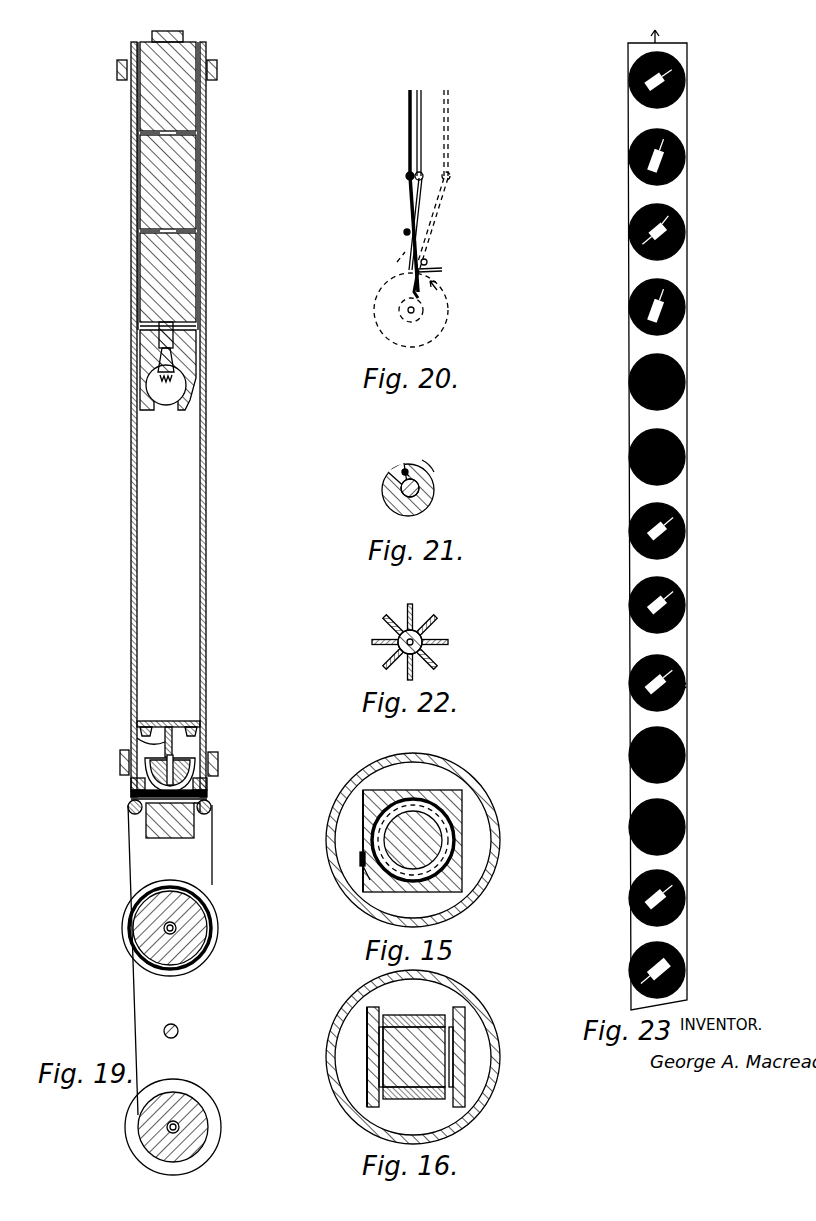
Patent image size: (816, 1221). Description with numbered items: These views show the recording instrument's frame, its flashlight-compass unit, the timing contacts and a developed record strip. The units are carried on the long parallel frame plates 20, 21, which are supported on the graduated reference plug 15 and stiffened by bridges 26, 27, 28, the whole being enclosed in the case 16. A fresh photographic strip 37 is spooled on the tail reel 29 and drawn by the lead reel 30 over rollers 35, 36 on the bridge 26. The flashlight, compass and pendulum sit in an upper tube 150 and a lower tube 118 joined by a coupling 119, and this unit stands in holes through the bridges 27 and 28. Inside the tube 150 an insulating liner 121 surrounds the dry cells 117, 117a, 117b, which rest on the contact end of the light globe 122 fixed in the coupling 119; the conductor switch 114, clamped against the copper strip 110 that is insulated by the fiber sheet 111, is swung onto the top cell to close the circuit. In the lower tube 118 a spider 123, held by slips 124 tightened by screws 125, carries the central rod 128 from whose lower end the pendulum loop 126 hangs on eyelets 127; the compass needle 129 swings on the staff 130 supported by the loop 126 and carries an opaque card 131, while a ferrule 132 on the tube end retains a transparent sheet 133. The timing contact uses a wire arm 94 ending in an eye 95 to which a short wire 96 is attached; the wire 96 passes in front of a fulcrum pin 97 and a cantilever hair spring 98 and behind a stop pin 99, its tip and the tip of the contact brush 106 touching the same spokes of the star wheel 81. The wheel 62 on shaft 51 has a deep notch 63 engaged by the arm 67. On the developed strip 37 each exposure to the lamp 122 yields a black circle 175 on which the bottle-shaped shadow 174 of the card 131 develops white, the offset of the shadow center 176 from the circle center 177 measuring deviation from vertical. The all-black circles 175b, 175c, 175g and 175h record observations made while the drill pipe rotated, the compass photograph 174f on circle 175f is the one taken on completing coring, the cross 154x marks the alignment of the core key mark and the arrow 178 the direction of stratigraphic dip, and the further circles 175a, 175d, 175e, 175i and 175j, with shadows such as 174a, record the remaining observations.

In FIG. 19, the conductor switch 114 is at (184, 36).
In FIG. 19, the graduated reference plug 15 is at (255, 68).
In FIG. 19, the bridge 28 is at (218, 72).
In FIG. 19, the electric dry cell 117 is at (152, 99).
In FIG. 15, the electric dry cell 117 is at (445, 862).
In FIG. 19, the electric dry cell 117a is at (152, 183).
In FIG. 19, the electric dry cell 117b is at (155, 272).
In FIG. 19, the liner 121 is at (206, 166).
In FIG. 15, the liner 121 is at (455, 847).
In FIG. 19, the upper tube 150 is at (206, 267).
In FIG. 15, the upper tube 150 is at (452, 834).
In FIG. 19, the electric light globe 122 is at (172, 379).
In FIG. 19, the coupling 119 is at (203, 375).
In FIG. 19, the lower tube 118 is at (206, 569).
In FIG. 19, the spider 123 is at (178, 721).
In FIG. 19, the slips 124 is at (200, 722).
In FIG. 19, the tail reel 29 is at (233, 930).
In FIG. 19, the screws 125 is at (200, 743).
In FIG. 19, the eyelets 127 is at (182, 761).
In FIG. 19, the rod 128 is at (138, 742).
In FIG. 19, the bridge 27 is at (120, 760).
In FIG. 19, the loop 126 is at (218, 764).
In FIG. 19, the indicator card 131 is at (207, 784).
In FIG. 19, the magnetic compass needle 129 is at (145, 779).
In FIG. 19, the ferrule 132 is at (207, 794).
In FIG. 19, the staff 130 is at (150, 796).
In FIG. 19, the case 16 is at (265, 807).
In FIG. 15, the case 16 is at (480, 781).
In FIG. 16, the case 16 is at (480, 1005).
In FIG. 19, the roller 36 is at (212, 808).
In FIG. 16, the roller 36 is at (405, 1095).
In FIG. 19, the roller 35 is at (130, 812).
In FIG. 16, the roller 35 is at (400, 1020).
In FIG. 19, the transparent sheet 133 is at (197, 822).
In FIG. 19, the bridge 26 is at (190, 832).
In FIG. 16, the bridge 26 is at (455, 1063).
In FIG. 19, the photographic strip 37 is at (212, 871).
In FIG. 23, the photographic strip 37 is at (630, 490).
In FIG. 19, the lead reel 30 is at (186, 1102).
In FIG. 20, the wire arm 94 is at (408, 143).
In FIG. 20, the eye 95 is at (405, 177).
In FIG. 20, the short wire 96 is at (412, 197).
In FIG. 20, the fulcrum pin 97 is at (404, 232).
In FIG. 20, the cantilever hair spring 98 is at (408, 251).
In FIG. 20, the stop pin 99 is at (427, 262).
In FIG. 20, the electric contact brush 106 is at (443, 270).
In FIG. 20, the star wheel 81 is at (438, 291).
In FIG. 22, the star wheel 81 is at (432, 628).
In FIG. 21, the arm 67 is at (406, 470).
In FIG. 21, the notch 63 is at (402, 472).
In FIG. 21, the wheel 62 is at (432, 485).
In FIG. 21, the shaft 51 is at (418, 493).
In FIG. 15, the frame plate 21 is at (365, 792).
In FIG. 16, the frame plate 21 is at (368, 1015).
In FIG. 15, the frame plate 20 is at (462, 800).
In FIG. 16, the frame plate 20 is at (466, 1030).
In FIG. 15, the conductor strip 110 is at (360, 858).
In FIG. 15, the insulation fiber sheet 111 is at (364, 866).
In FIG. 23, the compass shadow 174 is at (672, 213).
In FIG. 23, the center of circle 177 is at (672, 226).
In FIG. 23, the center of compass shadow 176 is at (675, 233).
In FIG. 23, the black circle 175 is at (670, 238).
In FIG. 23, the indicator disc 175a is at (686, 296).
In FIG. 23, the indicator 174a is at (680, 318).
In FIG. 23, the all black circle 175b is at (686, 384).
In FIG. 23, the all black circle 175c is at (686, 457).
In FIG. 23, the indicator disc 175d is at (680, 520).
In FIG. 23, the indicator disc 175e is at (680, 595).
In FIG. 23, the photograph 175f is at (684, 698).
In FIG. 23, the cross 154x is at (690, 685).
In FIG. 23, the arrow 178 is at (632, 685).
In FIG. 23, the compass photograph 174f is at (630, 690).
In FIG. 23, the all black circle 175g is at (686, 756).
In FIG. 23, the all black circle 175h is at (686, 829).
In FIG. 23, the indicator disc 175i is at (686, 894).
In FIG. 23, the indicator disc 175j is at (684, 976).